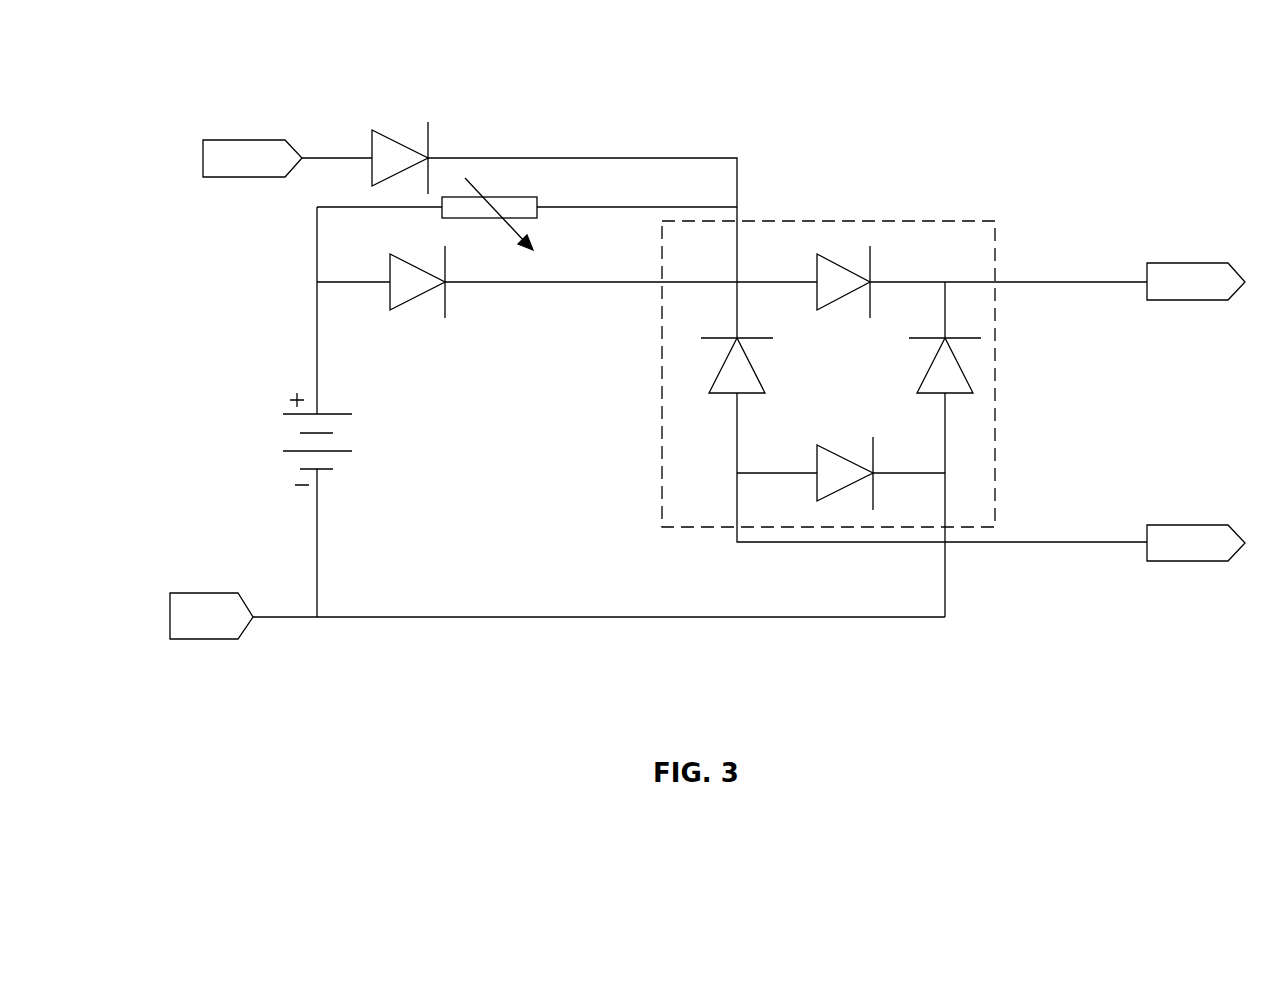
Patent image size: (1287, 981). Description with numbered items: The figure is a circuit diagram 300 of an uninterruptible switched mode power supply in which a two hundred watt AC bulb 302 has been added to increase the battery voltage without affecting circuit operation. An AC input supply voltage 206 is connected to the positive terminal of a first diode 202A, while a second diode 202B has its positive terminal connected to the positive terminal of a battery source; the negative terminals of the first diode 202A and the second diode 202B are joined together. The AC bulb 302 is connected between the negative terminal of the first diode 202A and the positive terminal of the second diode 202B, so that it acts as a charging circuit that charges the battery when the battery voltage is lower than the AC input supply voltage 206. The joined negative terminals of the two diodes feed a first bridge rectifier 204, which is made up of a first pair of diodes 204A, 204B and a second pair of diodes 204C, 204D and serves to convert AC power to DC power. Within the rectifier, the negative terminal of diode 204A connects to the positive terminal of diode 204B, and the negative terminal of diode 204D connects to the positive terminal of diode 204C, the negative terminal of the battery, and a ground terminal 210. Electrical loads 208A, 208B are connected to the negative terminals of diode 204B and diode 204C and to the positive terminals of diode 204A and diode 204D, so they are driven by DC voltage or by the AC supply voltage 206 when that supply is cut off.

The AC input supply voltage 206 is at (248, 140).
The first diode 202A is at (386, 136).
The second diode 202B is at (402, 308).
The 200 W AC bulb 302 is at (508, 197).
The first bridge rectifier 204 is at (863, 311).
The diode 204A is at (720, 370).
The diode 204B is at (833, 260).
The diode 204C is at (965, 373).
The diode 204D is at (853, 480).
The electrical load 208A is at (1187, 263).
The electrical load 208B is at (1192, 562).
The ground terminal 210 is at (210, 640).
The circuit diagram 300 is at (862, 694).